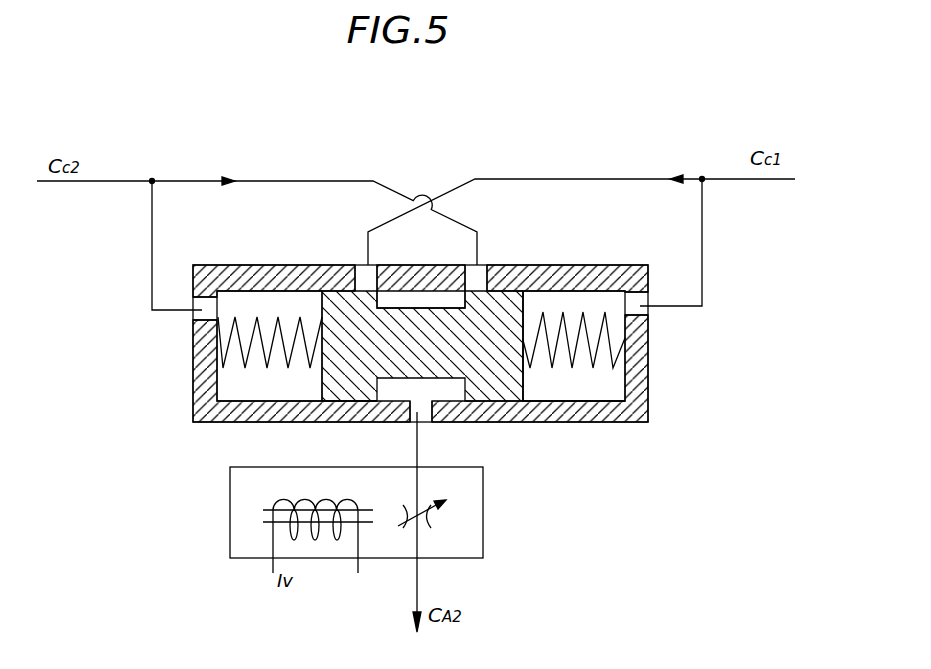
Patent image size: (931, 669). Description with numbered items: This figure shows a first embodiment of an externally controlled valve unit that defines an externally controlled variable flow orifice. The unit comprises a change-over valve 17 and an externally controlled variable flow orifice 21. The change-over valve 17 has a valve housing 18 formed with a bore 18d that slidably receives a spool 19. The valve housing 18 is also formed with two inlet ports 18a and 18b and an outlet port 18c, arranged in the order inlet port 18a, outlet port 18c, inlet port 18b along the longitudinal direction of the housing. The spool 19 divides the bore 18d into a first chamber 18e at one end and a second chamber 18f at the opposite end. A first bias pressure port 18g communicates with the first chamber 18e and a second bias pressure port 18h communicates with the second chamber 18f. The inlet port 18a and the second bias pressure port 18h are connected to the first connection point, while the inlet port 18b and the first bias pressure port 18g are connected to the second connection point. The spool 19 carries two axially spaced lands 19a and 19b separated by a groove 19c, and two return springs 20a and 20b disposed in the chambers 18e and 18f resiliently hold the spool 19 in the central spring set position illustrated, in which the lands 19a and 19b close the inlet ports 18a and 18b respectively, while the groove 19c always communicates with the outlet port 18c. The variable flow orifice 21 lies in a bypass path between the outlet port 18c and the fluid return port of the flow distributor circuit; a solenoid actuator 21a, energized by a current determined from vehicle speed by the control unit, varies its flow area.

The change-over valve 17 is at (258, 256).
The valve housing 18 is at (649, 395).
The inlet port 18a is at (358, 268).
The inlet port 18b is at (486, 267).
The outlet port 18c is at (429, 412).
The bore 18d is at (584, 393).
The first chamber 18e is at (280, 397).
The second chamber 18f is at (590, 311).
The first bias pressure port 18g is at (201, 317).
The second bias pressure port 18h is at (641, 300).
The spool 19 is at (524, 390).
The land 19a is at (350, 402).
The land 19b is at (524, 306).
The groove 19c is at (407, 307).
The return spring 20a is at (239, 325).
The return spring 20b is at (595, 364).
The externally controlled variable flow orifice 21 is at (317, 504).
The solenoid actuator 21a is at (293, 492).